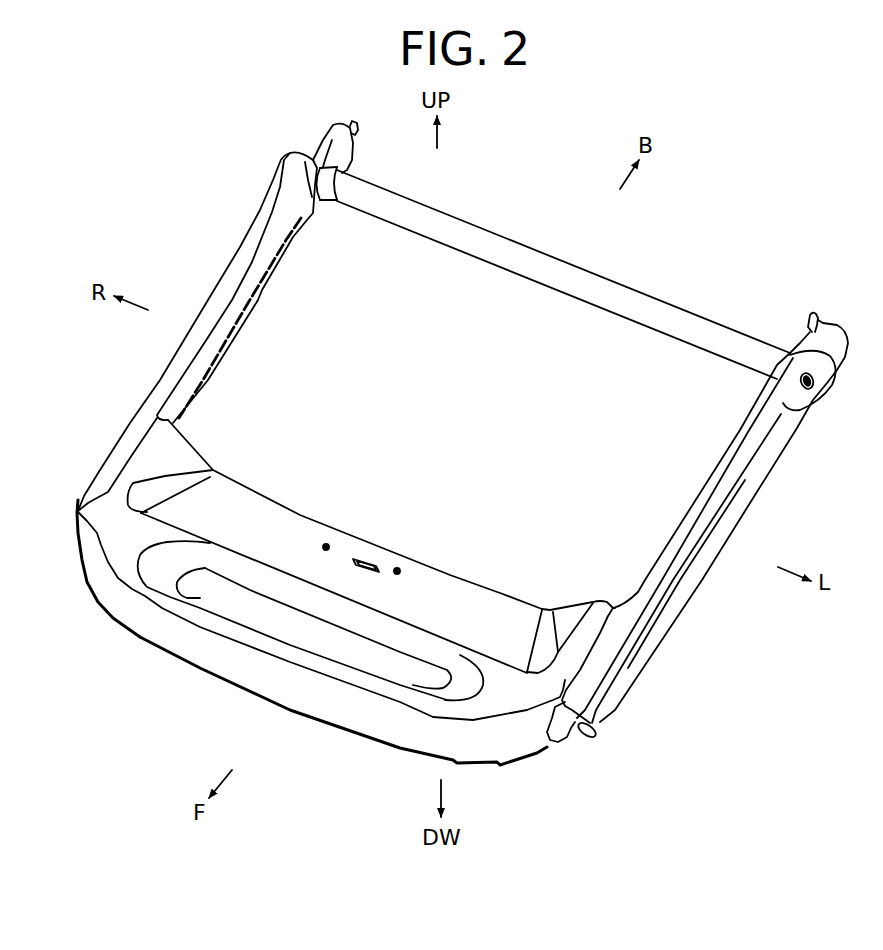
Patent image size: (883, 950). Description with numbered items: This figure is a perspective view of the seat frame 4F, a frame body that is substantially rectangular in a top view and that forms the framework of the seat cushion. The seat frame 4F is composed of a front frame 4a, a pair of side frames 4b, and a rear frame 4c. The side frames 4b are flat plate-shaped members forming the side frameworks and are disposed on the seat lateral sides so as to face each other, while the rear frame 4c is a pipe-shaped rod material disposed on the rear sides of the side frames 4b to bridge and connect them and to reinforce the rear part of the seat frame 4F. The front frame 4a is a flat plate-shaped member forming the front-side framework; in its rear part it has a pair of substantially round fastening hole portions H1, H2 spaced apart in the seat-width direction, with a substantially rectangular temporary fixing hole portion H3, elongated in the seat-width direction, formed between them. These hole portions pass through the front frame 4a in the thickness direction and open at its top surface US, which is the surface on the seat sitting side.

The seat frame 4F is at (547, 166).
The front frame 4a is at (257, 514).
The side frame 4b is at (273, 259).
The rear frame 4c is at (655, 300).
The fastening hole portion H1 is at (327, 543).
The fastening hole portion H2 is at (398, 567).
The temporary fixing hole portion H3 is at (364, 557).
The top surface US is at (452, 608).